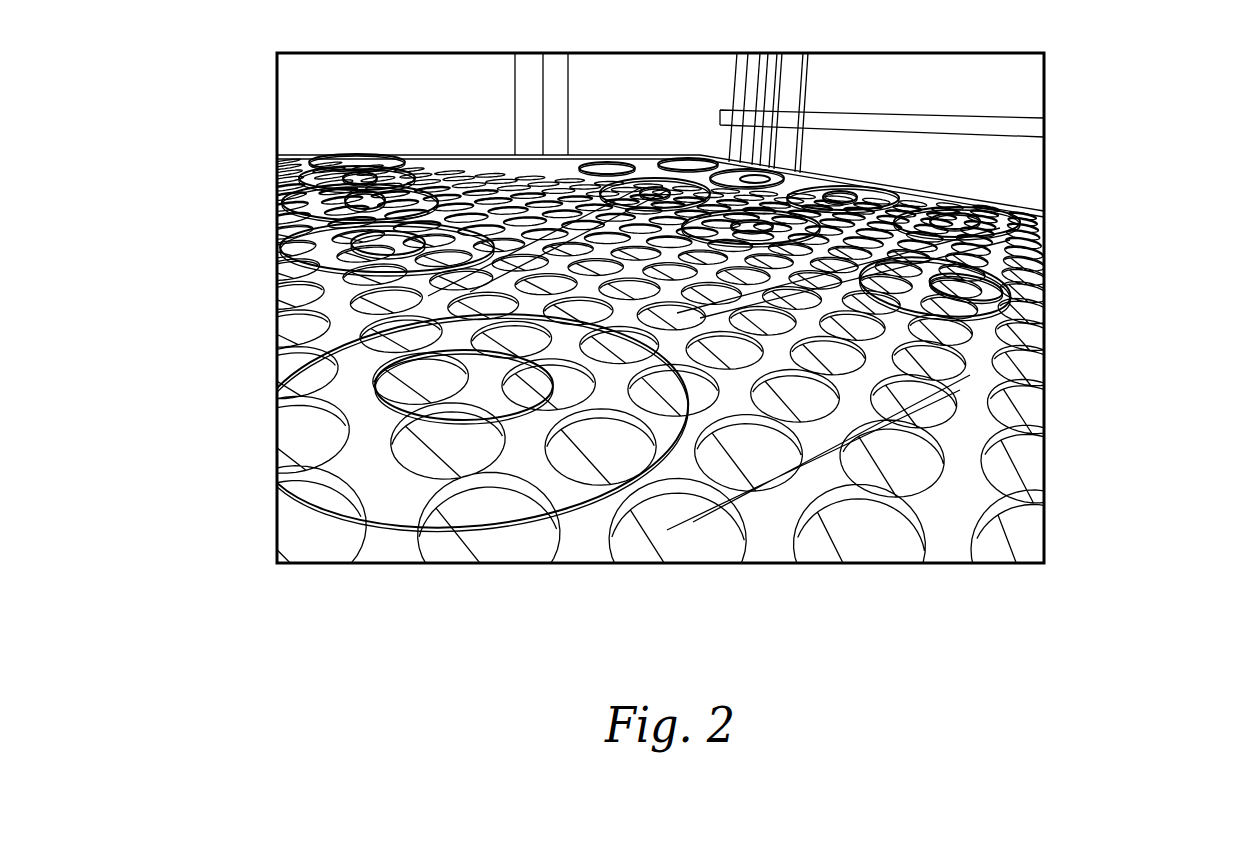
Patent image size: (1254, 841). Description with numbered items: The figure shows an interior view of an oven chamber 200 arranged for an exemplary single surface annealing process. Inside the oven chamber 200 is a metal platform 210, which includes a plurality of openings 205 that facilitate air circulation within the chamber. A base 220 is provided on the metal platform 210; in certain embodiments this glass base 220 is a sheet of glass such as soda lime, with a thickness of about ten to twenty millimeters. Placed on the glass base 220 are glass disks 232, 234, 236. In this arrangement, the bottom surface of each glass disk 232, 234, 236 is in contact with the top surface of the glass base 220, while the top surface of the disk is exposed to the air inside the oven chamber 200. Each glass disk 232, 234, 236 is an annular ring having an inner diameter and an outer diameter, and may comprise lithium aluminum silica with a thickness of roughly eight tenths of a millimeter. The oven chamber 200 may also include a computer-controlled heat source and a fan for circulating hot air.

The oven chamber 200 is at (296, 88).
The openings 205 is at (865, 545).
The metal platform 210 is at (659, 428).
The glass base 220 is at (580, 525).
The glass disk 232 is at (357, 390).
The glass disk 234 is at (352, 258).
The glass disk 236 is at (982, 307).